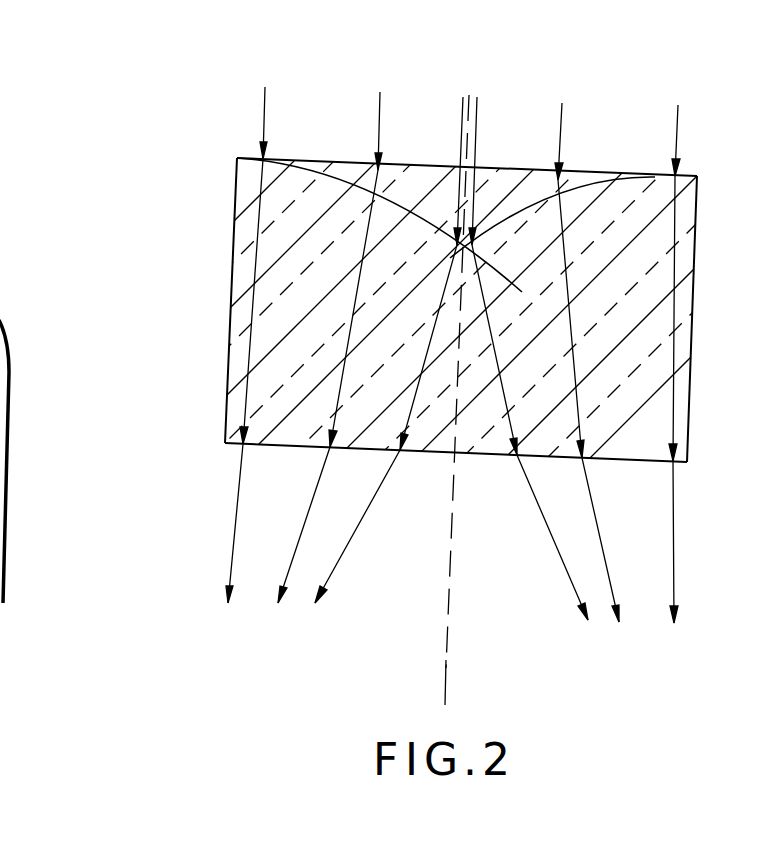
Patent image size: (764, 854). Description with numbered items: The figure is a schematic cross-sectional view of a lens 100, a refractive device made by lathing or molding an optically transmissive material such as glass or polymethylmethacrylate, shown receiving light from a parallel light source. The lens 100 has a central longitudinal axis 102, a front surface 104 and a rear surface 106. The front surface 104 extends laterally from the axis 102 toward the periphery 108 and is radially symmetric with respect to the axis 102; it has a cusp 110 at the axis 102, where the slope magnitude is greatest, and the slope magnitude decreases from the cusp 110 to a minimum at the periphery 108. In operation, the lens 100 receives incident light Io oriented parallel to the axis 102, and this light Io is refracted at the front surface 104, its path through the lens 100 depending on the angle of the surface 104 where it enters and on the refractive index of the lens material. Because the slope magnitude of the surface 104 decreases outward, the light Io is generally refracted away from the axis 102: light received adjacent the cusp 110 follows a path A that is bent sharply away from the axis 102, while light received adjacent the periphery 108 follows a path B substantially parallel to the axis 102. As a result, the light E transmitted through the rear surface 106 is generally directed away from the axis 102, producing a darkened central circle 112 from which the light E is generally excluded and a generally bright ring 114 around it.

The lens 100 is at (198, 279).
The central longitudinal axis 102 is at (446, 686).
The front surface 104 is at (347, 172).
The rear surface 106 is at (283, 445).
The periphery 108 is at (237, 157).
The cusp 110 is at (446, 239).
The darkened central circle 112 is at (422, 548).
The bright ring 114 is at (633, 593).
The incident light Io is at (477, 138).
The path A is at (500, 398).
The path B is at (689, 302).
The transmitted light E is at (570, 583).